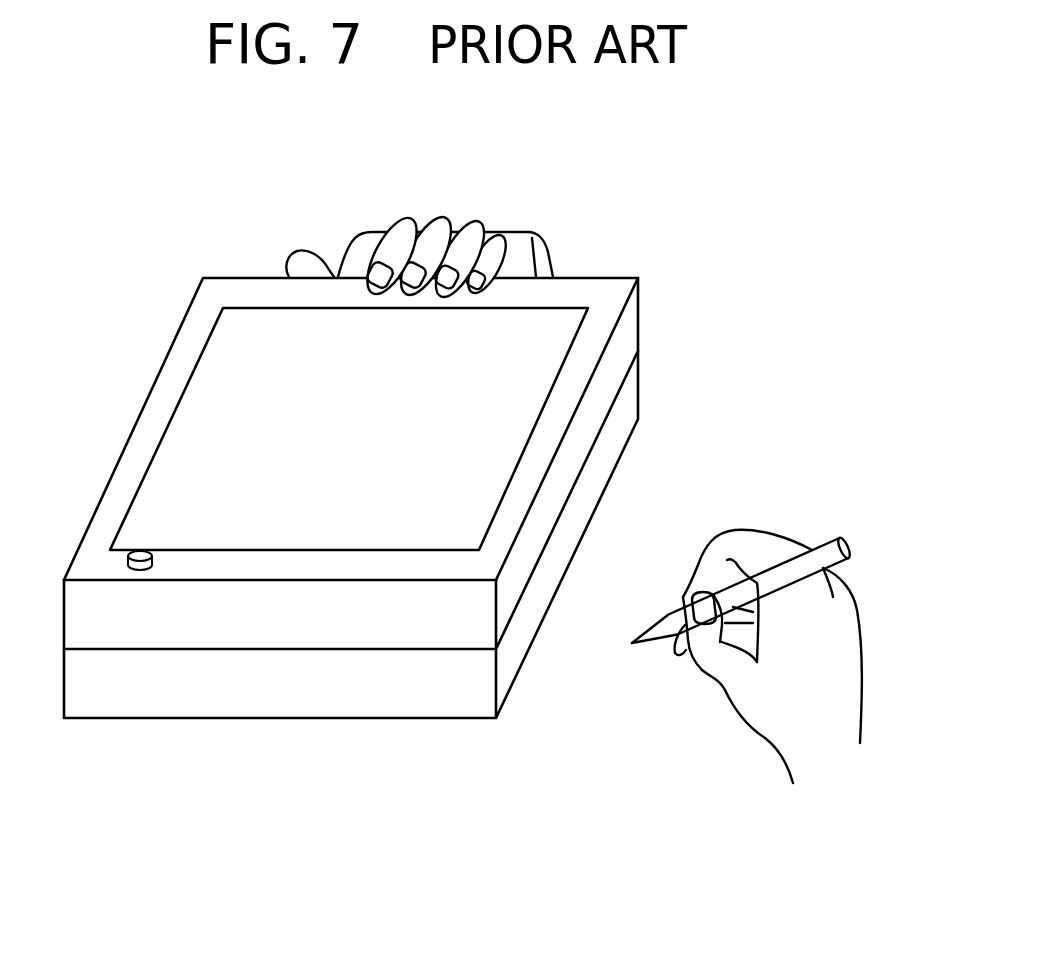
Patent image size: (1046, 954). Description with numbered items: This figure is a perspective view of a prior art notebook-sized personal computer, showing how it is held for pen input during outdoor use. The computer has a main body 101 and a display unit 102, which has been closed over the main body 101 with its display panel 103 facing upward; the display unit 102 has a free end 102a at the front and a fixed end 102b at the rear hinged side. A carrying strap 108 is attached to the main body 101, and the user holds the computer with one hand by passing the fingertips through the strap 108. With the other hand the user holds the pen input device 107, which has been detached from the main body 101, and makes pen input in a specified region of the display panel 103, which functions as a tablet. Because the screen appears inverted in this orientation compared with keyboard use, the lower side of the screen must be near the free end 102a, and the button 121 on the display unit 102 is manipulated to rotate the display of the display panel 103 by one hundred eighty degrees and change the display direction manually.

The main body 101 is at (433, 700).
The display unit 102 is at (472, 618).
The free end 102a is at (330, 564).
The fixed end 102b is at (502, 295).
The display panel 103 is at (235, 365).
The pen input device 107 is at (820, 555).
The carrying strap 108 is at (525, 252).
The button 121 is at (137, 552).